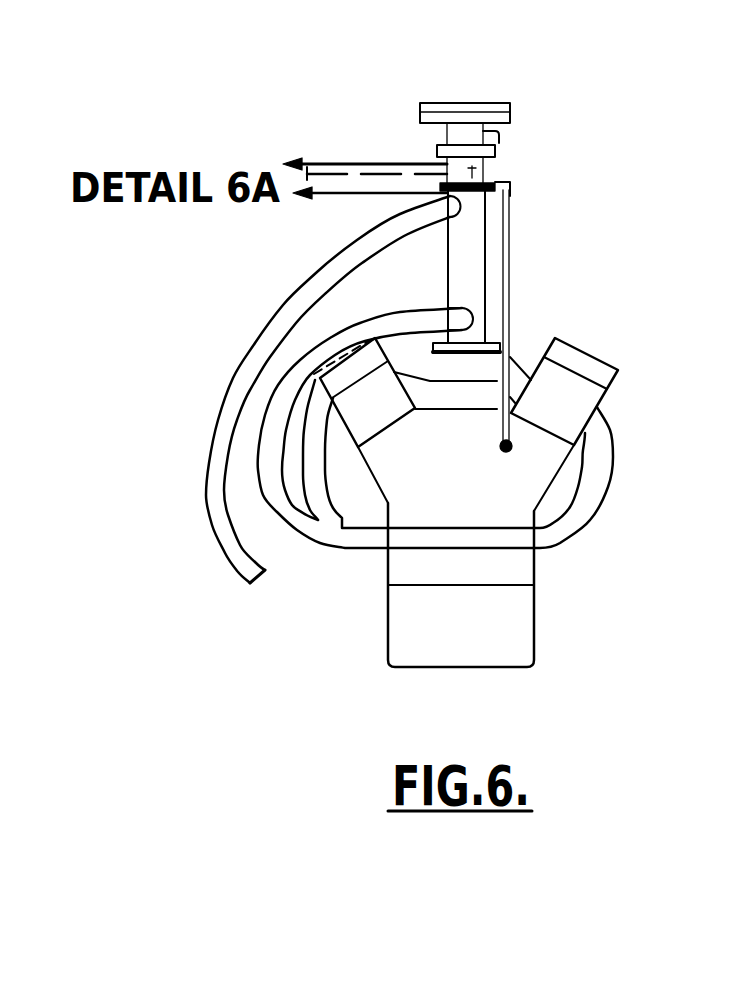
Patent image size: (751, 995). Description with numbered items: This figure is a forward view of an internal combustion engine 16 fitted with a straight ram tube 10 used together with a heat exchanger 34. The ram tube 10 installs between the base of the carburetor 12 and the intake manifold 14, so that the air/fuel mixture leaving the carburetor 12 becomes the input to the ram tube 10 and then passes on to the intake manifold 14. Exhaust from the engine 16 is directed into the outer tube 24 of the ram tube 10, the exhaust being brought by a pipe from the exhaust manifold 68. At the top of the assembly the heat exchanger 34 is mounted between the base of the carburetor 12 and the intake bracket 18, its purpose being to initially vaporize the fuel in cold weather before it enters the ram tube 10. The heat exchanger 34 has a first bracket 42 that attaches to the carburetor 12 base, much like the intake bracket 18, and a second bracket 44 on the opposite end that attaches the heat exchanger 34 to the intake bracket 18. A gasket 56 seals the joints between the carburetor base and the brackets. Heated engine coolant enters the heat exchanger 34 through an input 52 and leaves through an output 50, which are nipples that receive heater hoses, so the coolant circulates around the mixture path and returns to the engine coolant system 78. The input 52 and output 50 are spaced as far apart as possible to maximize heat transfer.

The ram tube 10 is at (640, 298).
The carburetor 12 is at (510, 124).
The intake manifold 14 is at (518, 377).
The internal combustion engine 16 is at (537, 475).
The intake bracket 18 is at (508, 196).
The outer tube 24 is at (328, 389).
The heat exchanger 34 is at (495, 152).
The first bracket 42 is at (463, 122).
The second bracket 44 is at (500, 185).
The output 50 is at (437, 152).
The input 52 is at (493, 165).
The gasket 56 is at (443, 192).
The exhaust manifold 68 is at (361, 538).
The engine coolant system 78 is at (318, 163).